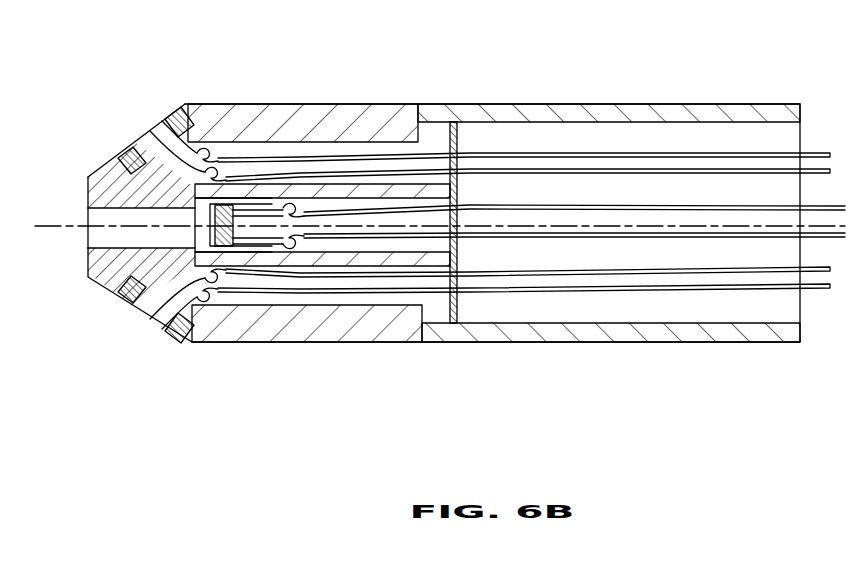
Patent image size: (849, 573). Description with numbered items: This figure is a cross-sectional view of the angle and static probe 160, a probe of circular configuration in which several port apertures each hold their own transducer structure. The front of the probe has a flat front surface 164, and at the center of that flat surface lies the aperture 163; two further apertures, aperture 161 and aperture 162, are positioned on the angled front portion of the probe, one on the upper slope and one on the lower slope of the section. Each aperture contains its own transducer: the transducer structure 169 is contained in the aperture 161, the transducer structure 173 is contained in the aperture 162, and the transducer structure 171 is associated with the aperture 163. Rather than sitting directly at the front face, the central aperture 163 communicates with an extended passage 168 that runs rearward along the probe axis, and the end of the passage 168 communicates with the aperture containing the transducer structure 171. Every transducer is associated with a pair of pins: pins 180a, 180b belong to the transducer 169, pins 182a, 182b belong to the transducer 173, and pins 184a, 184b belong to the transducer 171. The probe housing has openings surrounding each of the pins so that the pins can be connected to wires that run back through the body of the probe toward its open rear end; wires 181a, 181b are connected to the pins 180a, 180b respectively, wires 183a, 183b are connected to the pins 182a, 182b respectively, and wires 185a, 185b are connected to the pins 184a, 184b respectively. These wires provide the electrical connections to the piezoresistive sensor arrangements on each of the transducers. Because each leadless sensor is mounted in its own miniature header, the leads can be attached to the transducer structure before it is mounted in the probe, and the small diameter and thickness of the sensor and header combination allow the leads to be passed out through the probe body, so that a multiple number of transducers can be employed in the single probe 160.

The angle and static probe 160 is at (372, 110).
The port aperture 161 is at (184, 122).
The port aperture 162 is at (187, 346).
The port aperture 163 is at (88, 218).
The flat front surface 164 is at (88, 262).
The extended passage 168 is at (132, 244).
The transducer structure 169 is at (148, 143).
The transducer structure 171 is at (133, 215).
The transducer structure 173 is at (150, 302).
The pin 180a is at (225, 150).
The pin 180b is at (160, 125).
The wire 181a is at (552, 153).
The wire 181b is at (655, 168).
The pin 182a is at (218, 298).
The pin 182b is at (162, 306).
The wire 183a is at (623, 288).
The wire 183b is at (707, 270).
The pin 184a is at (280, 203).
The pin 184b is at (259, 238).
The wire 185a is at (393, 210).
The wire 185b is at (480, 238).